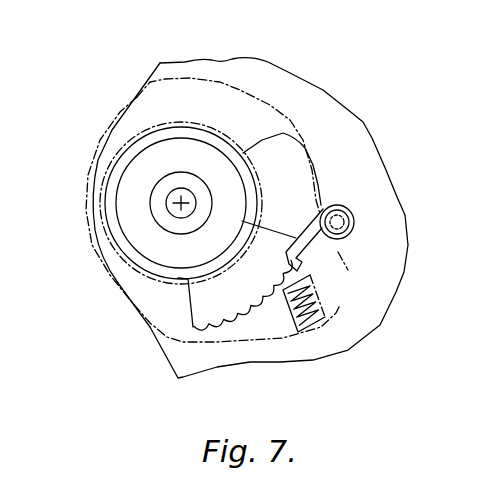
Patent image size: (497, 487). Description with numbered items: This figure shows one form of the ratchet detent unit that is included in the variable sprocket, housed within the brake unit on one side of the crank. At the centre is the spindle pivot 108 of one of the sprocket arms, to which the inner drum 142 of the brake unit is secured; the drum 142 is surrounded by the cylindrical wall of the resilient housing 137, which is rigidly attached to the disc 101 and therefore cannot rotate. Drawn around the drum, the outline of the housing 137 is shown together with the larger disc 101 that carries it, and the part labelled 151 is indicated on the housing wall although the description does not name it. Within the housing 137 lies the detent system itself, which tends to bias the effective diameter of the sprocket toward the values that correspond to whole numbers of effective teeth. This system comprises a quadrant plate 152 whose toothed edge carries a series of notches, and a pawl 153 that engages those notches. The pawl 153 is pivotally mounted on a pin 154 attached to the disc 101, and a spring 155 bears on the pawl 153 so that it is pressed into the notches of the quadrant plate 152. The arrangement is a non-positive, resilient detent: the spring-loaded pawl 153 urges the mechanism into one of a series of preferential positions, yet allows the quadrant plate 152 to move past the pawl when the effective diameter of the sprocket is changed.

The disc 101 is at (316, 102).
The spindle pivot 108 is at (162, 188).
The resilient housing 137 is at (237, 92).
The inner drum 142 is at (113, 203).
The housing wall 151 is at (122, 290).
The quadrant plate 152 is at (217, 292).
The pawl 153 is at (327, 247).
The pin 154 is at (337, 205).
The spring 155 is at (313, 323).